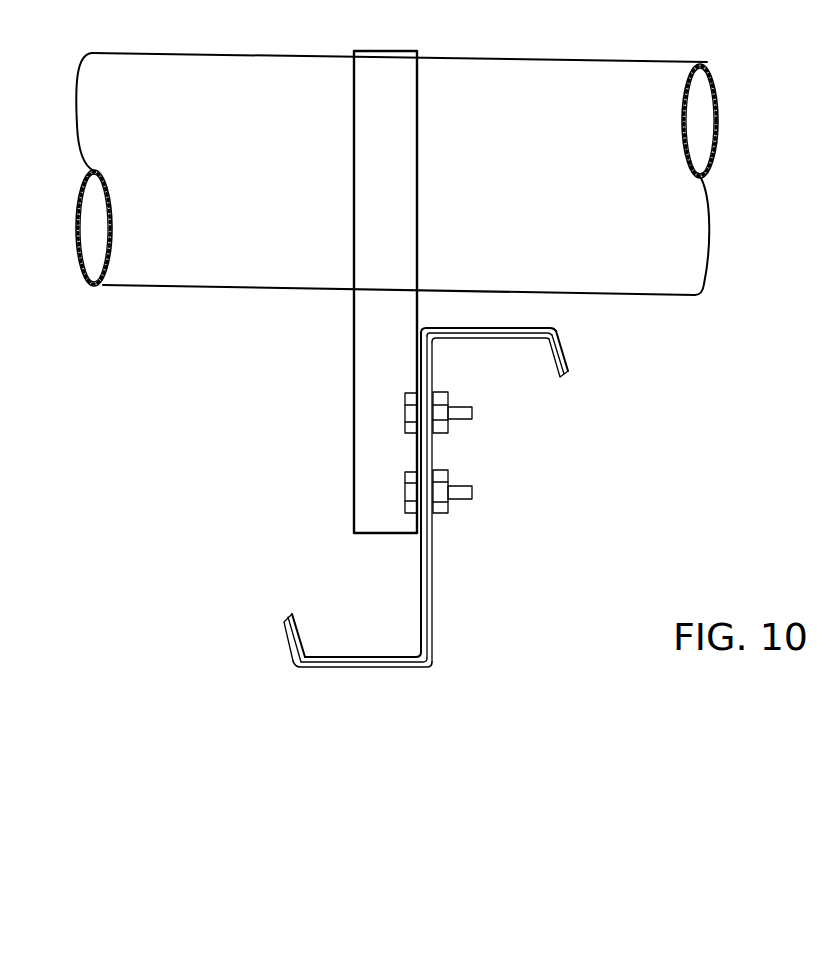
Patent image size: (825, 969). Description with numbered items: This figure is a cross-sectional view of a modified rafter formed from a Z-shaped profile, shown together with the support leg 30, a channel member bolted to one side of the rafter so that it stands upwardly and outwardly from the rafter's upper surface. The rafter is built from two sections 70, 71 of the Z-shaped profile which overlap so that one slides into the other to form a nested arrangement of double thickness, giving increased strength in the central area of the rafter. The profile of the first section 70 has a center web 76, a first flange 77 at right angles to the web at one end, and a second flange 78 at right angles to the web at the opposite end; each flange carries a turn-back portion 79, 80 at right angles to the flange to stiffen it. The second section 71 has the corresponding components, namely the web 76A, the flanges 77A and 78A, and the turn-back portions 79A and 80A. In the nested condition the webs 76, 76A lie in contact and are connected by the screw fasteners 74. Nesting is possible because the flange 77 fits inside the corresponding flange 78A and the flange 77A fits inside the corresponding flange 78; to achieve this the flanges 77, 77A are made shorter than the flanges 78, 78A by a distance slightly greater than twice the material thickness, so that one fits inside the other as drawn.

The support leg 30 is at (367, 403).
The section of the Z-shaped profile 70 is at (403, 447).
The section of the Z-shaped profile 71 is at (458, 452).
The screw fastener 74 is at (440, 504).
The center web 76 is at (429, 497).
The web 76A is at (420, 553).
The first flange 77 is at (488, 320).
The flange 77A is at (375, 653).
The second flange 78 is at (362, 662).
The flange 78A is at (503, 327).
The turn-back portion 79 is at (286, 640).
The turn-back portion 79A is at (603, 379).
The turn-back portion 80 is at (553, 362).
The turn-back portion 80A is at (259, 665).